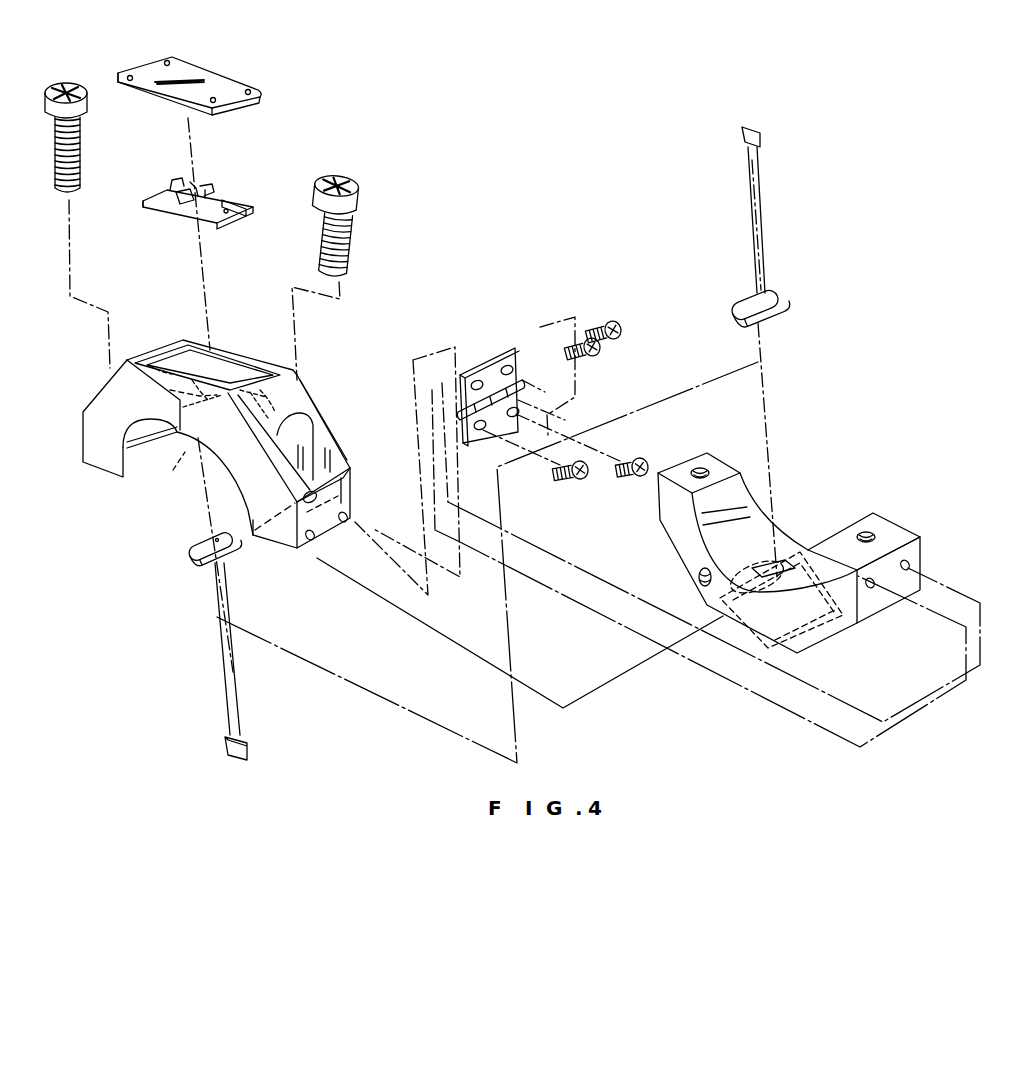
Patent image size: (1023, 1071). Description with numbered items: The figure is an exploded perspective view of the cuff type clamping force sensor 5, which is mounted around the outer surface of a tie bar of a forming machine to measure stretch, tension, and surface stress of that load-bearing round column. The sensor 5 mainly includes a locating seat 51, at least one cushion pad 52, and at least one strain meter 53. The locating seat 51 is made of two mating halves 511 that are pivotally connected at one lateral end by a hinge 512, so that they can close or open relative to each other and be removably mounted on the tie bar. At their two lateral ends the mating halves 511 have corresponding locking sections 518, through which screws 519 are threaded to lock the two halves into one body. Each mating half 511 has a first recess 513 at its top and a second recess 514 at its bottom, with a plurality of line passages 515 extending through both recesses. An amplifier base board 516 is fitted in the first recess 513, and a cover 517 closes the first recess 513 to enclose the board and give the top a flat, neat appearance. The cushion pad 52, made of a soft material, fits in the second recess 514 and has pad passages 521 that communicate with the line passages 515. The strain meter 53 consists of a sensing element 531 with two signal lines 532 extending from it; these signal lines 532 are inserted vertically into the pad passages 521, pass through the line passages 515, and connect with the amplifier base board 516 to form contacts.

The clamping force sensor 5 is at (857, 248).
The locating seat 51 is at (563, 709).
The mating halves 511 is at (840, 538).
The hinge 512 is at (490, 347).
The first recess 513 is at (222, 373).
The second recess 514 is at (177, 465).
The line passages 515 is at (170, 390).
The amplifier base board 516 is at (213, 193).
The cover 517 is at (228, 85).
The locking sections 518 is at (313, 440).
The screws 519 is at (355, 187).
The cushion pad 52 is at (200, 573).
The pad passages 521 is at (232, 546).
The strain meter 53 is at (240, 662).
The sensing element 531 is at (226, 740).
The signal lines 532 is at (230, 695).